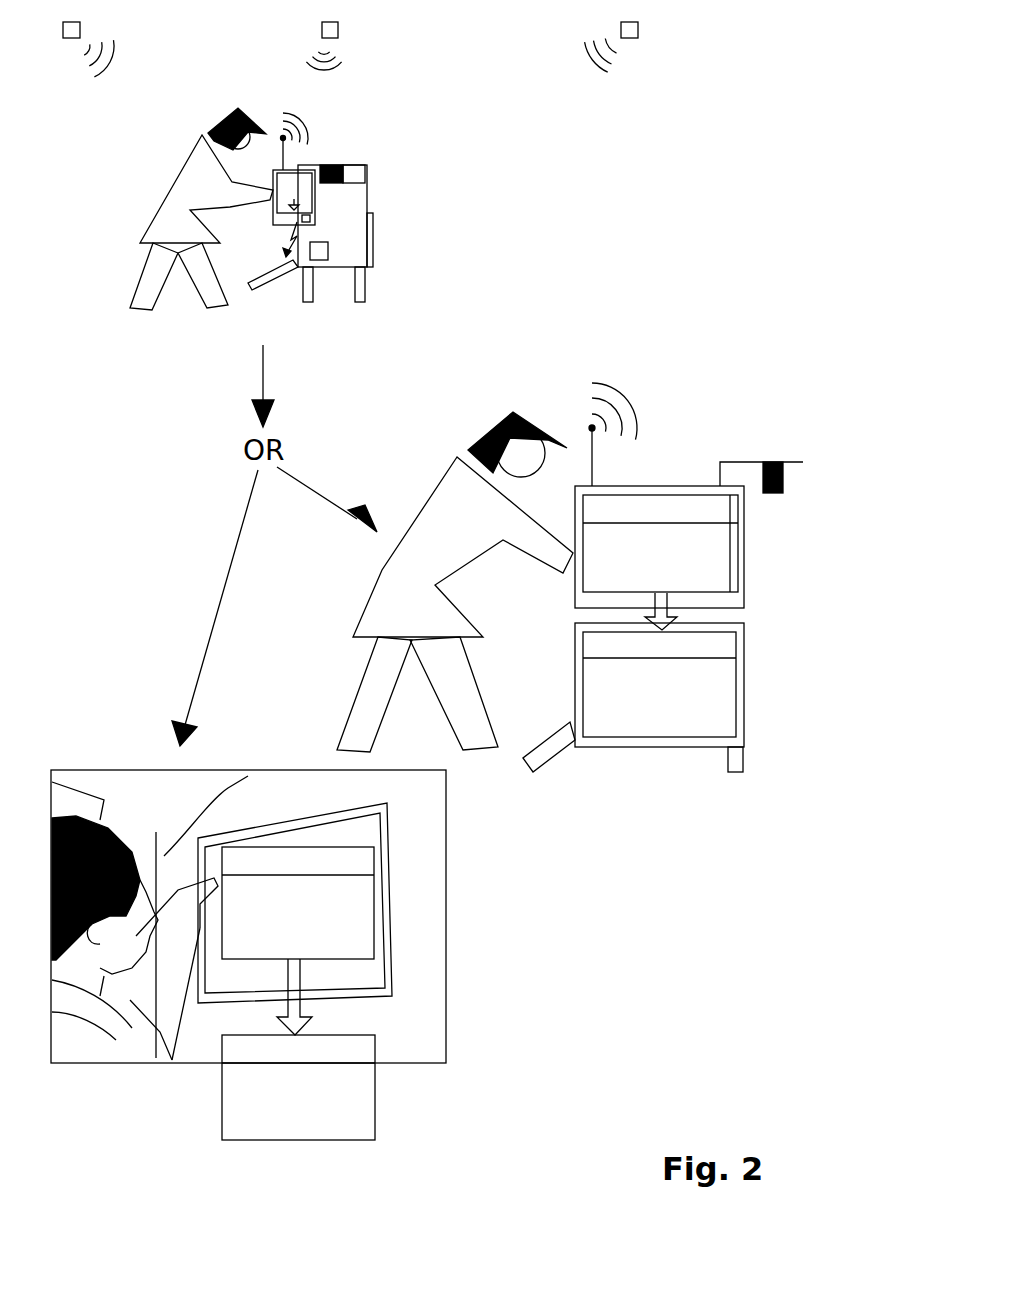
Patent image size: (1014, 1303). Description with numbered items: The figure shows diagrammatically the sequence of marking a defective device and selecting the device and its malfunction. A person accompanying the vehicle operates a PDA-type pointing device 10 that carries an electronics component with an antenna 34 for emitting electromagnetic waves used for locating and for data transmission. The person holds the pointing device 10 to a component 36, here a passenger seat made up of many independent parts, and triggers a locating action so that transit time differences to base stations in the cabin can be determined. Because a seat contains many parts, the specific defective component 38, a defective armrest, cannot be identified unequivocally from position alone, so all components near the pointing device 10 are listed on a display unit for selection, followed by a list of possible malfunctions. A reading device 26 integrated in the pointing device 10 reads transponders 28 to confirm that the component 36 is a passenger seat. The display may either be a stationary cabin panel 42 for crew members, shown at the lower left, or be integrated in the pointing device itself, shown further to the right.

The pointing device 10 is at (348, 239).
The reading device 26 is at (312, 217).
The transponders 28 is at (320, 253).
The antenna 34 is at (288, 153).
The component 36 is at (353, 253).
The component 38 is at (273, 283).
The panel 42 is at (182, 793).